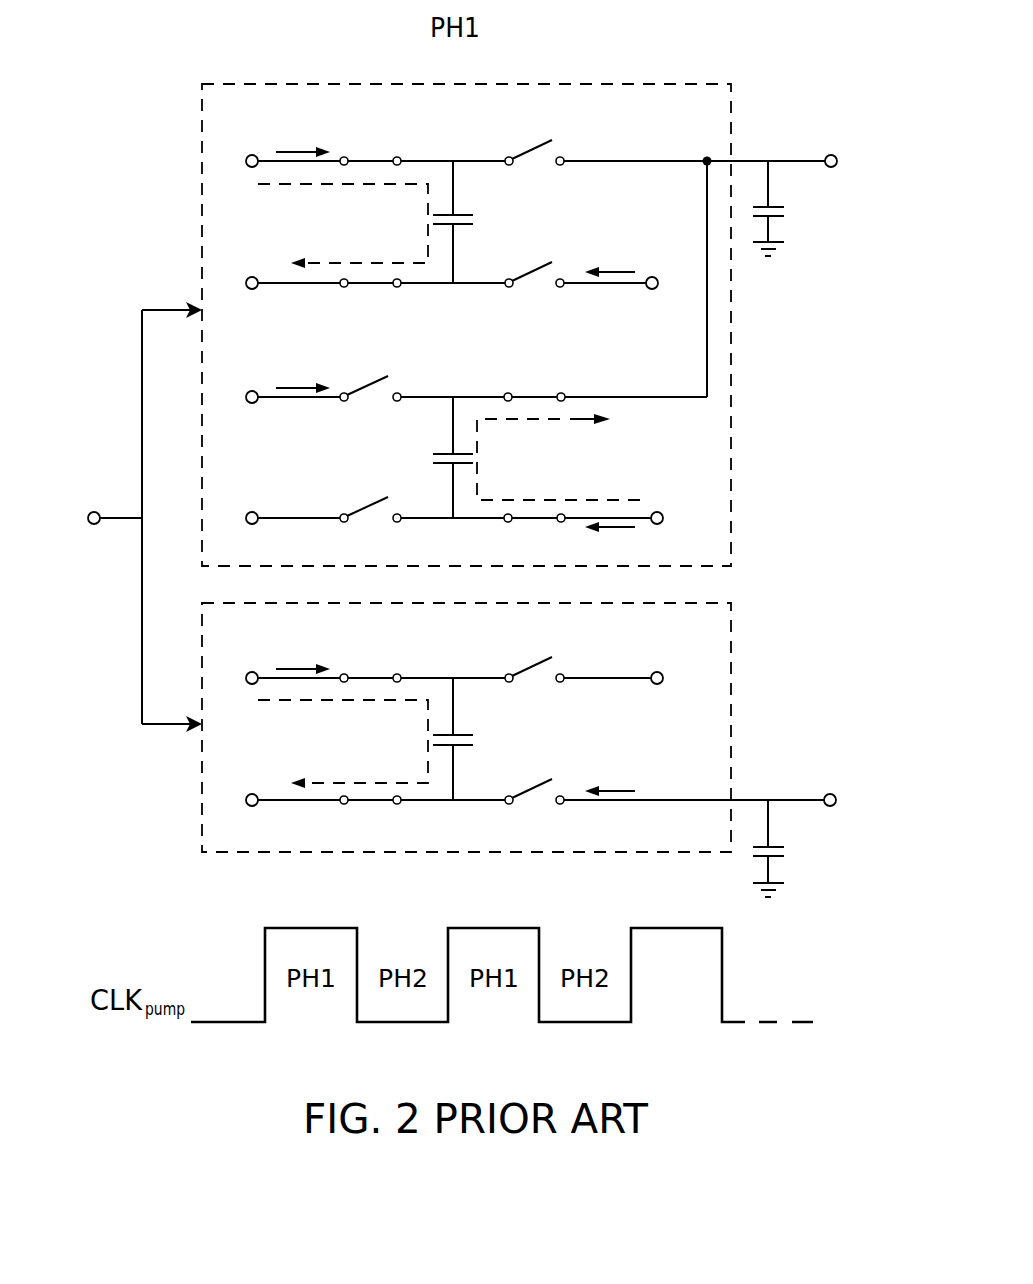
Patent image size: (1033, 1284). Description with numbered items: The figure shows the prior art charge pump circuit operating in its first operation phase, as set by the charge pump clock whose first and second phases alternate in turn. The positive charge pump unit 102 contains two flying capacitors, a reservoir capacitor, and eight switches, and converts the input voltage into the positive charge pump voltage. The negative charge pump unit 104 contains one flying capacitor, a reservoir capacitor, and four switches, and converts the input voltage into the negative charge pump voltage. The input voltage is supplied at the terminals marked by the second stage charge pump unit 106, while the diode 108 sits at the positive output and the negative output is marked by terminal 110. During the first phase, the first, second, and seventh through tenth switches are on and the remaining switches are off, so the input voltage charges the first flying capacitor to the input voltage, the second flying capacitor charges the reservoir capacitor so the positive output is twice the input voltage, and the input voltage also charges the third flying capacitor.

The positive charge pump unit 102 is at (237, 84).
The negative charge pump unit 104 is at (240, 852).
The second stage charge pump unit 106 is at (250, 155).
The diode 108 is at (835, 155).
The VCL output terminal 110 is at (835, 794).